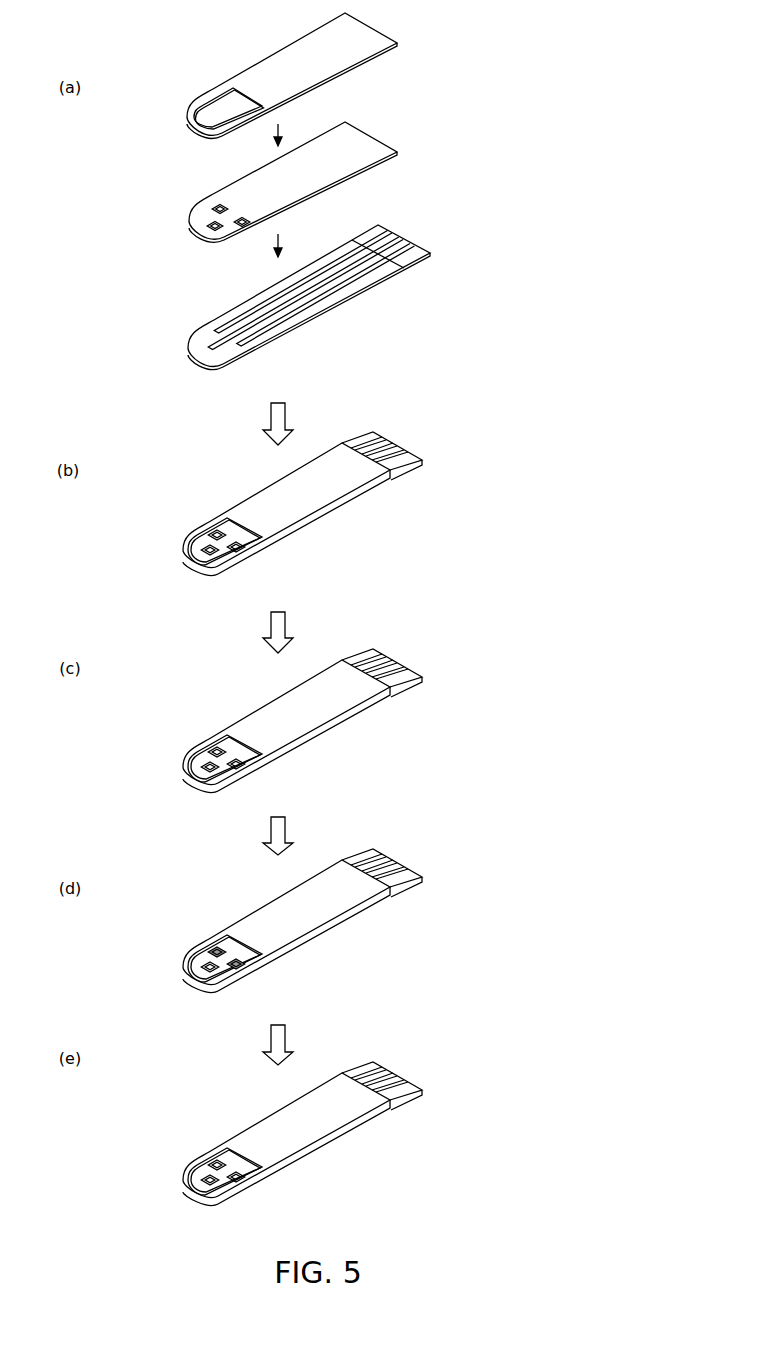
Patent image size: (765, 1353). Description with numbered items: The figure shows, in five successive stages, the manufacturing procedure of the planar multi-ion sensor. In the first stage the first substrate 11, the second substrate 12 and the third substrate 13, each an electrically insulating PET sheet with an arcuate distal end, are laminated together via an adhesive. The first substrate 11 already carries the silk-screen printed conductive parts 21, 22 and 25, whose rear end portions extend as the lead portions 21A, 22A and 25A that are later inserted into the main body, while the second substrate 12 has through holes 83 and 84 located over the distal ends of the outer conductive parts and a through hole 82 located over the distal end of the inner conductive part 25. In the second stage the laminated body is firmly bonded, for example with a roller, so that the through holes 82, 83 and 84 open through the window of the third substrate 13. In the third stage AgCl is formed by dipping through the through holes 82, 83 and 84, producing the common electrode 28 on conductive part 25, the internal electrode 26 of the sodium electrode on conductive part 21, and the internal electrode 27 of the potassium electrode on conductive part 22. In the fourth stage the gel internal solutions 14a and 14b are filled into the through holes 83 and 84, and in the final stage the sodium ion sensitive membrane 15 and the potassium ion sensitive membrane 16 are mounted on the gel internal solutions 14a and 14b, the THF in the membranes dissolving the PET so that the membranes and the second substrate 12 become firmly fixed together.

The first substrate 11 is at (387, 283).
The second substrate 12 is at (368, 173).
The third substrate 13 is at (363, 69).
The outer side conductive part 21 is at (297, 280).
The inner side conductive part 25 is at (325, 293).
The outer side conductive part 22 is at (285, 320).
The lead portion 21A is at (400, 226).
The lead portion 25A is at (408, 237).
The lead portion 22A is at (418, 241).
The through hole 82 is at (215, 231).
The through hole 83 is at (190, 214).
The through hole 84 is at (241, 227).
The internal electrode 26 is at (213, 747).
The internal electrode 27 is at (243, 767).
The common electrode 28 is at (217, 772).
The gel internal solution 14a is at (213, 947).
The gel internal solution 14b is at (245, 968).
The sodium ion sensitive membrane 15 is at (215, 1158).
The potassium ion sensitive membrane 16 is at (247, 1182).